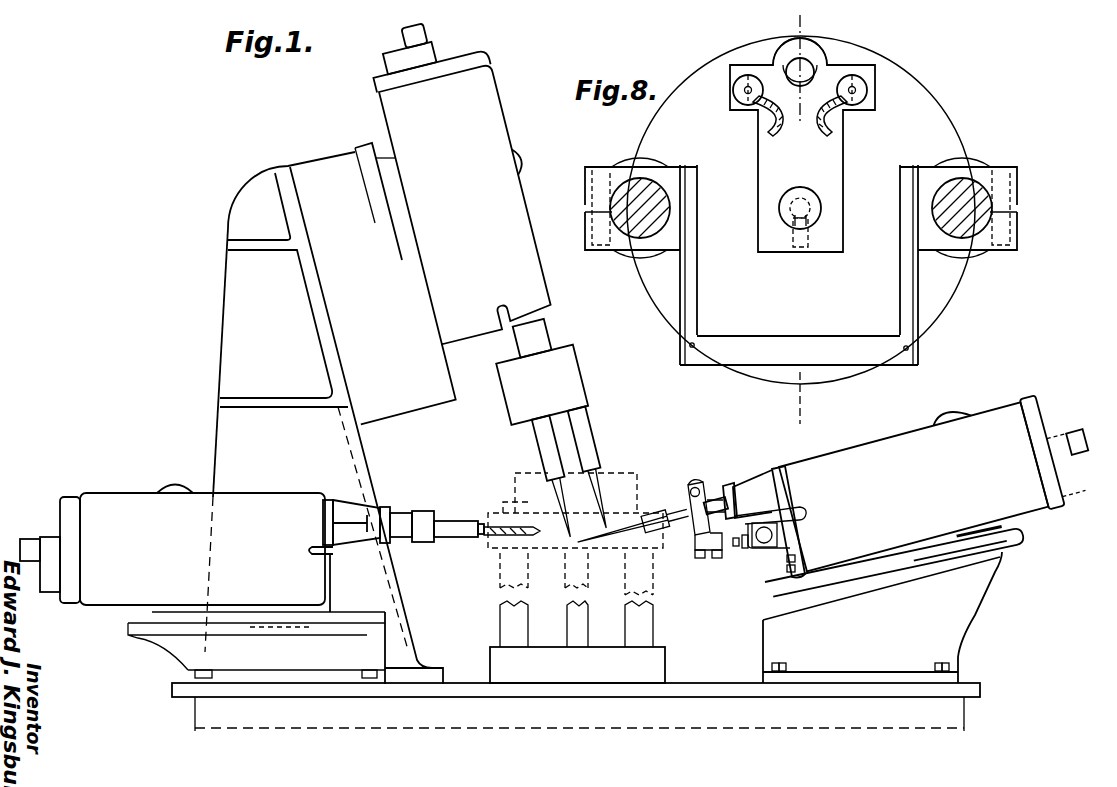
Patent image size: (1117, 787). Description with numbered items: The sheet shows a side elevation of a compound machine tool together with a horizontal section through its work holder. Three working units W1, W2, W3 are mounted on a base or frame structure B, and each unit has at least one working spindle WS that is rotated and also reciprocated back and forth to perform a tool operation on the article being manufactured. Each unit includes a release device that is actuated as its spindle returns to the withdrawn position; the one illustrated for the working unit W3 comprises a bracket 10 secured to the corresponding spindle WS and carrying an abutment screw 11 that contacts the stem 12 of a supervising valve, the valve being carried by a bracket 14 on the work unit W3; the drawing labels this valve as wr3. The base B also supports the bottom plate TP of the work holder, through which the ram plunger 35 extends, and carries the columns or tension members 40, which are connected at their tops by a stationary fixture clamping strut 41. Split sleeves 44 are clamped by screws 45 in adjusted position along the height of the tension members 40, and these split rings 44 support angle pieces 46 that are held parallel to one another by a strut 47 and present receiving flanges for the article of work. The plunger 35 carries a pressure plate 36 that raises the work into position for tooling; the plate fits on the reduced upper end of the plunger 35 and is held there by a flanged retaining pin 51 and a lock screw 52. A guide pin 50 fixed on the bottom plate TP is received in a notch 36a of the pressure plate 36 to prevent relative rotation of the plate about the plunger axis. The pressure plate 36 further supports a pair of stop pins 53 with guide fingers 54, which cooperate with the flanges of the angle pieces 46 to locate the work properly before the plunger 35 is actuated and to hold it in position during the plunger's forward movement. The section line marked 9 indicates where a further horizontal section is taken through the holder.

In FIG. 1, the section line 9- 9 is at (790, 412).
In FIG. 8, the section line 9- 9 is at (791, 32).
In FIG. 1, the bracket 10 is at (700, 505).
In FIG. 1, the abutment screw 11 is at (720, 558).
In FIG. 1, the stem 12 is at (735, 548).
In FIG. 1, the bracket 14 is at (788, 537).
In FIG. 1, the plunger 35 is at (578, 627).
In FIG. 8, the pressure plate 36 is at (830, 225).
In FIG. 8, the notch 36a is at (815, 82).
In FIG. 1, the tension members 40 is at (500, 620).
In FIG. 8, the tension members 40 is at (635, 232).
In FIG. 1, the fixture clamping strut 41 is at (652, 557).
In FIG. 8, the split sleeves 44 is at (585, 172).
In FIG. 8, the screws 45 is at (592, 223).
In FIG. 8, the angle pieces 46 is at (680, 344).
In FIG. 8, the strut 47 is at (898, 366).
In FIG. 8, the guide pin 50 is at (807, 66).
In FIG. 8, the flanged retaining pin 51 is at (817, 203).
In FIG. 8, the lock screw 52 is at (802, 247).
In FIG. 8, the stop pins 53 is at (736, 94).
In FIG. 8, the guide fingers 54 is at (778, 137).
In FIG. 1, the bottom plate TP is at (660, 663).
In FIG. 8, the bottom plate TP is at (847, 375).
In FIG. 1, the base B is at (952, 712).
In FIG. 1, the working unit W1 is at (252, 582).
In FIG. 1, the working unit W2 is at (444, 293).
In FIG. 1, the working unit W3 is at (898, 531).
In FIG. 1, the working spindle WS is at (468, 498).
In FIG. 1, the work rest wr3 is at (758, 530).